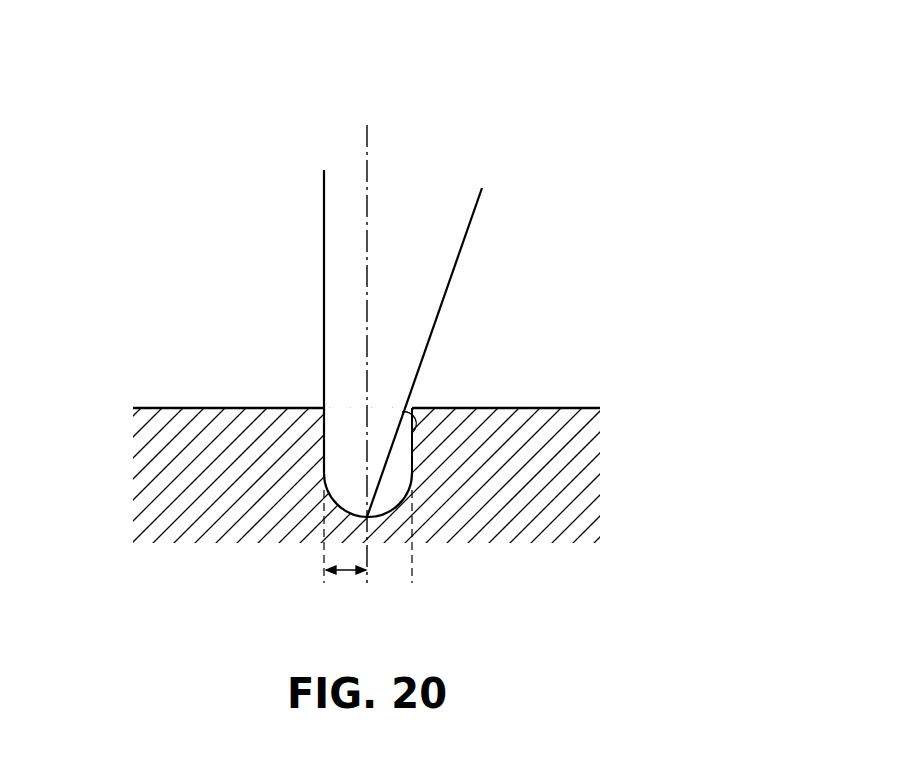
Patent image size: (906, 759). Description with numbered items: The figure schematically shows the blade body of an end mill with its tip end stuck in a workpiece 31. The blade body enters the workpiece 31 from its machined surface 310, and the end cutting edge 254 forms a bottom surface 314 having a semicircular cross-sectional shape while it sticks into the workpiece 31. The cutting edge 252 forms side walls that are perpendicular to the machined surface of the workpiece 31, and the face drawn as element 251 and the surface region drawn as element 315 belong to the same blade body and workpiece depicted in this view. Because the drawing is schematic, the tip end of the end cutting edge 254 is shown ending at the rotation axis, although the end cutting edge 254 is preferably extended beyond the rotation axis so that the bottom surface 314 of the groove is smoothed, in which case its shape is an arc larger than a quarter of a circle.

The workpiece 31 is at (82, 183).
The tool rake face 251 is at (468, 232).
The cutting edge 252 is at (324, 258).
The end cutting edge 254 is at (360, 512).
The machined surface 310 is at (364, 418).
The bottom surface 314 is at (408, 490).
The workpiece top surface 315 is at (413, 406).